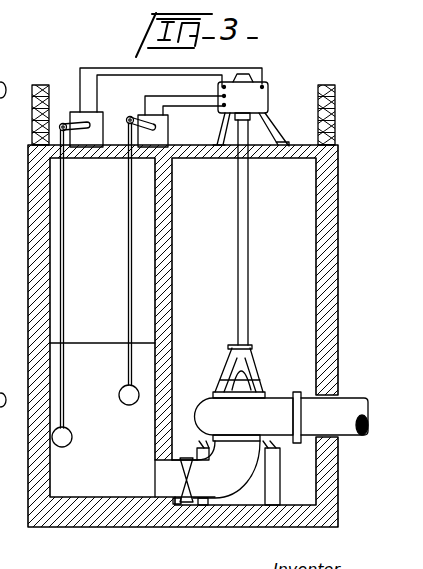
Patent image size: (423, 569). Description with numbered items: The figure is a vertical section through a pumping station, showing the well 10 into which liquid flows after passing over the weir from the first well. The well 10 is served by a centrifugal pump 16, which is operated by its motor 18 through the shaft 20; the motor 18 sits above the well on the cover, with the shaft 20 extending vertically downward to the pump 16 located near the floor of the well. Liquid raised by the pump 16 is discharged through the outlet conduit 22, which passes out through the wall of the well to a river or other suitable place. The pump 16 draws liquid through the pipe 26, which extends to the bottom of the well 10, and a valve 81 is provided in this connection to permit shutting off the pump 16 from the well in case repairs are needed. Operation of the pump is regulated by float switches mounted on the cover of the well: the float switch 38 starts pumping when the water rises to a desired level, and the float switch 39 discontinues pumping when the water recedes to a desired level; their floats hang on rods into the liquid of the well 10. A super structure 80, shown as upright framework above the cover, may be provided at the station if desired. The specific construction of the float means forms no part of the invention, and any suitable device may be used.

The well 10 is at (100, 483).
The centrifugal pump 16 is at (272, 405).
The motor 18 is at (270, 90).
The shaft 20 is at (246, 245).
The outlet conduit 22 is at (348, 402).
The pipe 26 is at (222, 483).
The float switch 38 is at (168, 126).
The float switch 39 is at (103, 114).
The super structure 80 is at (334, 122).
The valve 81 is at (172, 502).